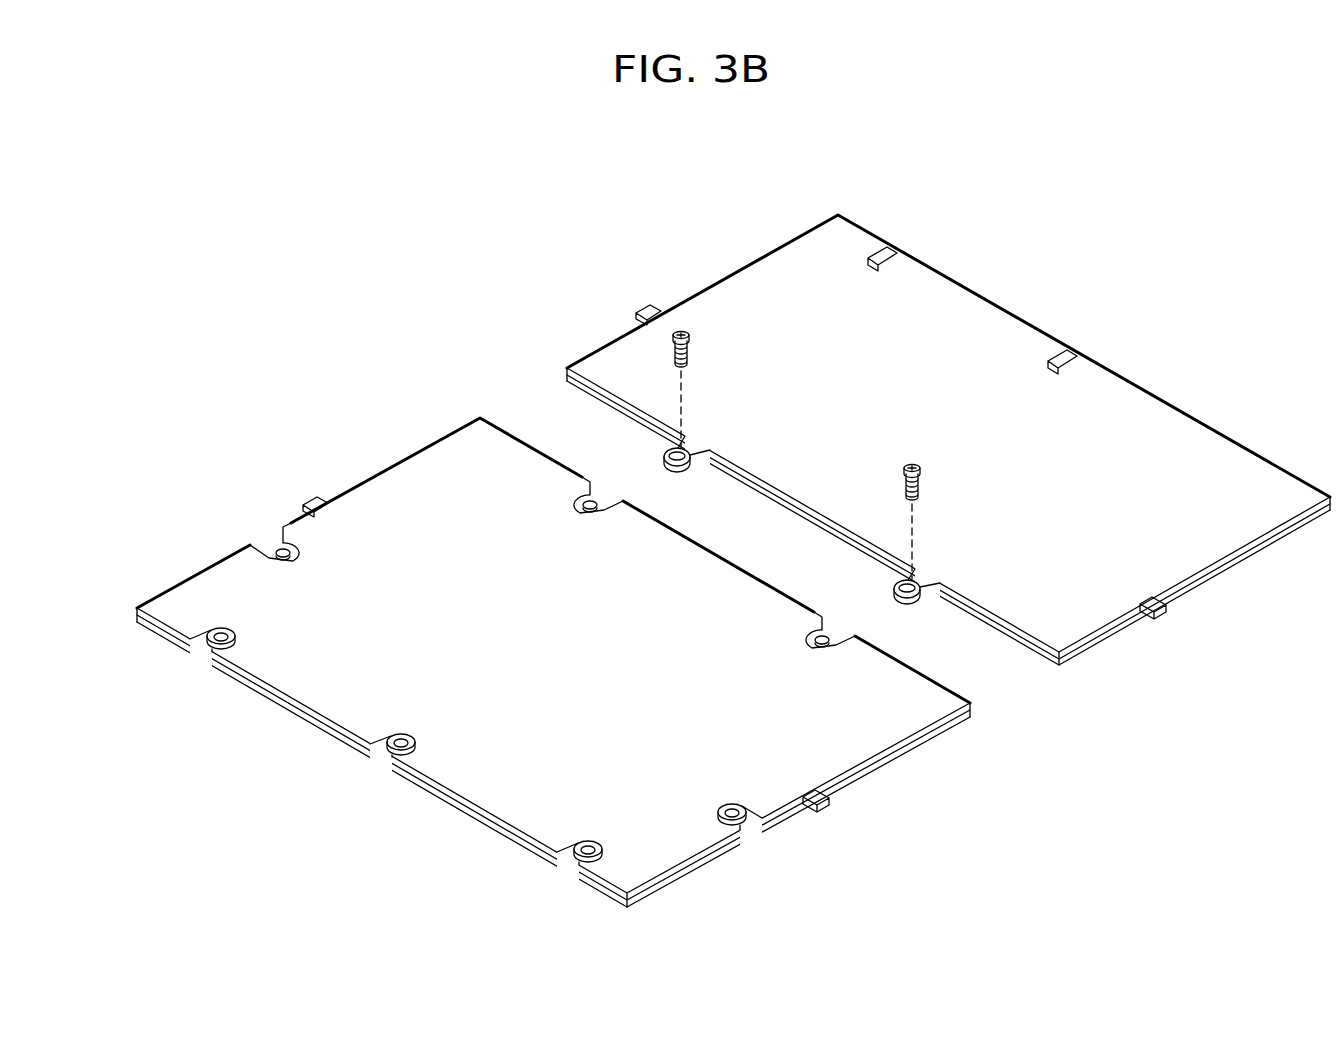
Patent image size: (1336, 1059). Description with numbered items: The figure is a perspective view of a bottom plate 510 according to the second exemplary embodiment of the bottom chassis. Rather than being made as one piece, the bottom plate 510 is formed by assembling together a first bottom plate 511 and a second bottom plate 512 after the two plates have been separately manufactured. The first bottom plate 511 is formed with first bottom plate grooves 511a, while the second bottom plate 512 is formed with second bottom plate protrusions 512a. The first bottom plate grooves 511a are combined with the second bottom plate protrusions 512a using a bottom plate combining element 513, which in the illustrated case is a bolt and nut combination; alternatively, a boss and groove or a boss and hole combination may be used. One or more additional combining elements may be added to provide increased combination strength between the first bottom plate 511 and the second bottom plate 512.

The bottom plate 510 is at (683, 204).
The first bottom plate 511 is at (553, 629).
The first bottom plate grooves 511a is at (587, 483).
The second bottom plate 512 is at (948, 440).
The second bottom plate protrusions 512a is at (935, 600).
The bottom plate combining element 513 is at (681, 331).